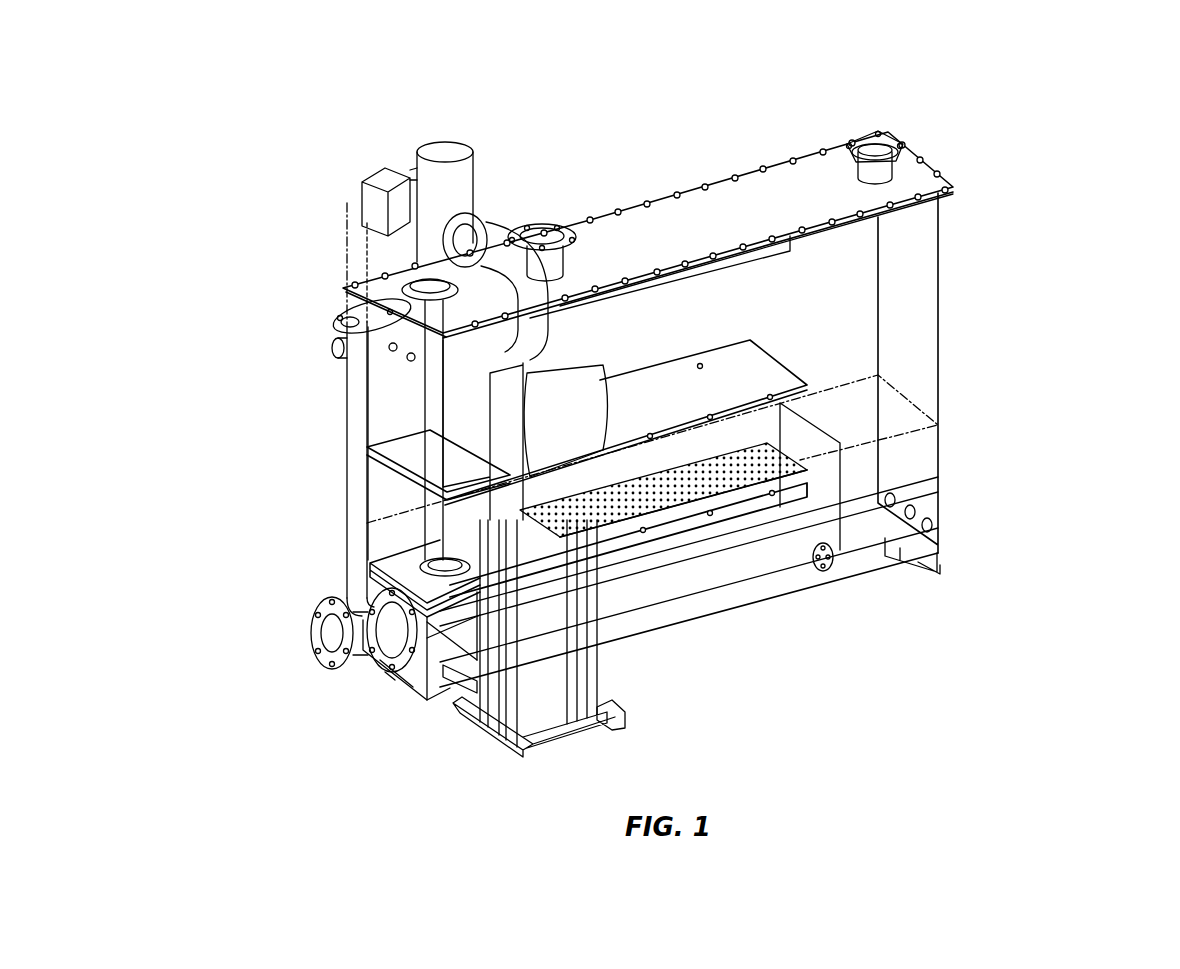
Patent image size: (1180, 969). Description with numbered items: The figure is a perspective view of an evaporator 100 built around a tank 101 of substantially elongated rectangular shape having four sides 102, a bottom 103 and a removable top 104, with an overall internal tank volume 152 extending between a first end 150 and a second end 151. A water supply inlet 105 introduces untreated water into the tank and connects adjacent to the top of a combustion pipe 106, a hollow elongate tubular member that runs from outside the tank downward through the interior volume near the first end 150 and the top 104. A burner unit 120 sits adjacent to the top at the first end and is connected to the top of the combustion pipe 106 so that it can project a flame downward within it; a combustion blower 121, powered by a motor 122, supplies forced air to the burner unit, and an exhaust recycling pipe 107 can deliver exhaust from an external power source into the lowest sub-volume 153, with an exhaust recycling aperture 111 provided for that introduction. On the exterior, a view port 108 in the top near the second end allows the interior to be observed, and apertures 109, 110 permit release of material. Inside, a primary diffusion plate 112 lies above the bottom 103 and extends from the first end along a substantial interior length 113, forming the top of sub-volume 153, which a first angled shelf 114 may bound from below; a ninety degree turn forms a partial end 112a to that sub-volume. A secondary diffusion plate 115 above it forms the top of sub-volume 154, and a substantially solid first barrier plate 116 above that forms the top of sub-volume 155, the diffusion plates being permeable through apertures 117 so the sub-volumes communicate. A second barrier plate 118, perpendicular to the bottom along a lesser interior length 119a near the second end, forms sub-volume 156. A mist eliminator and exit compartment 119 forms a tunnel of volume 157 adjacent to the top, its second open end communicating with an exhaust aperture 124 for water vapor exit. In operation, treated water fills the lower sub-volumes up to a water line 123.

The evaporator 100 is at (380, 95).
The tank 101 is at (1055, 115).
The sides 102 is at (860, 272).
The bottom 103 is at (727, 608).
The removable top 104 is at (770, 200).
The water supply inlet 105 is at (395, 290).
The combustion pipe 106 is at (435, 410).
The exhaust recycling pipe 107 is at (355, 450).
The view port 108 is at (868, 147).
The aperture 109 is at (828, 573).
The aperture 110 is at (927, 525).
The exhaust recycling aperture 111 is at (372, 672).
The primary diffusion plate 112 is at (370, 565).
The partial end 112a is at (840, 540).
The substantial interior length 113 is at (860, 655).
The first angled shelf 114 is at (690, 578).
The secondary diffusion plate 115 is at (783, 540).
The first barrier plate 116 is at (745, 370).
The apertures 117 is at (635, 485).
The second barrier plate 118 is at (815, 480).
The mist eliminator and exit compartment 119 is at (672, 268).
The lesser interior length 119a is at (978, 625).
The burner unit 120 is at (465, 195).
The combustion blower 121 is at (477, 470).
The motor 122 is at (565, 398).
The water line 123 is at (925, 398).
The exhaust aperture 124 is at (545, 222).
The first end 150 is at (310, 566).
The second end 151 is at (966, 403).
The overall internal tank volume 152 is at (690, 305).
The sub-volume 153 is at (645, 577).
The sub-volume 154 is at (710, 537).
The sub-volume 155 is at (835, 432).
The sub-volume 156 is at (872, 400).
The volume 157 is at (758, 256).